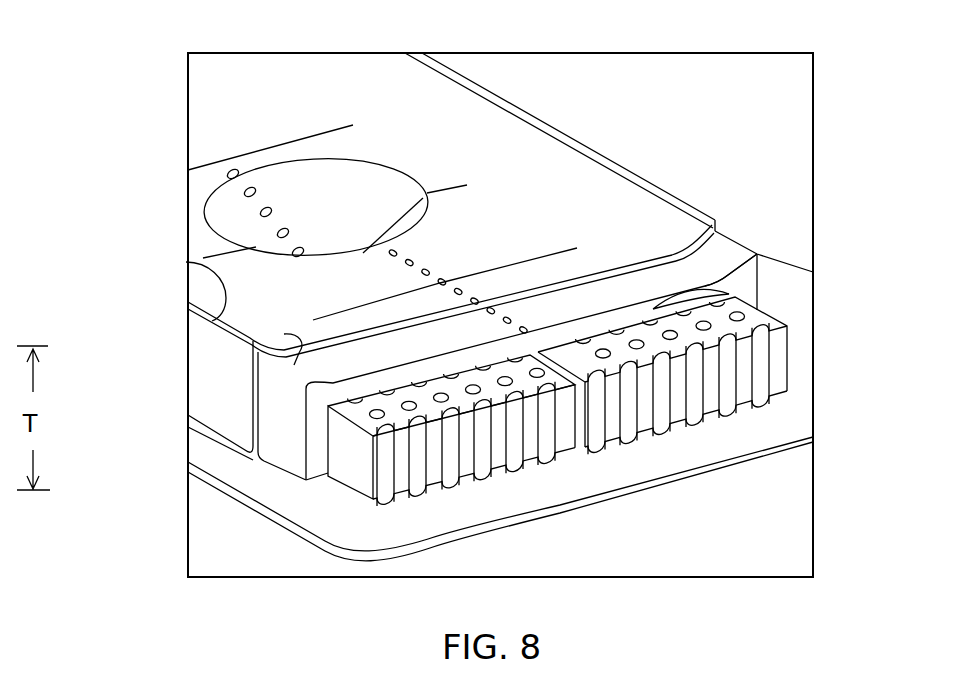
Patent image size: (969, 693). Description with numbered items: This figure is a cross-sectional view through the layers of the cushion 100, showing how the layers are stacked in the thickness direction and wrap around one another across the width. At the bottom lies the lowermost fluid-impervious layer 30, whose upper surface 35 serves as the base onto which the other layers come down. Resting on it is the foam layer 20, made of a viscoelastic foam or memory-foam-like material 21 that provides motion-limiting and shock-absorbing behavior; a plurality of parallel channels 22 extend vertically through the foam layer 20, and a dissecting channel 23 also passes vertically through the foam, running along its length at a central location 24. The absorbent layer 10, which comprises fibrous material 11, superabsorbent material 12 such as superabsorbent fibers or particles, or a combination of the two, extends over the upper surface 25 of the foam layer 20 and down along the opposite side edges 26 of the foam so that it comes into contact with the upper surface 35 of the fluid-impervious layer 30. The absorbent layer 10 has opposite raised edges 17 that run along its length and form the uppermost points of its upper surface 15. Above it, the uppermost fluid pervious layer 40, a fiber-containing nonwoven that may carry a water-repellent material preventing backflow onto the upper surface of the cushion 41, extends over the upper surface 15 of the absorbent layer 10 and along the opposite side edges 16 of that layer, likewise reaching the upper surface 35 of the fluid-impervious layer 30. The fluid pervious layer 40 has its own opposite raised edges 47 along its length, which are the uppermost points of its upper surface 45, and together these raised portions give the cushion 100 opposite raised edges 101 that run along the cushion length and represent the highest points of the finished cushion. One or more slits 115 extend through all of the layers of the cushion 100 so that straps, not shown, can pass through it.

The cushion 100 is at (708, 156).
The absorbent layer 10 is at (722, 250).
The fibrous material 11 is at (744, 280).
The superabsorbent material 12 is at (706, 302).
The upper surface of absorbent layer 15 is at (727, 243).
The opposite side edges of absorbent layer 16 is at (275, 401).
The opposite raised edges of absorbent layer 17 is at (226, 335).
The foam layer 20 is at (498, 452).
The viscoelastic foam or memory-foam-like material 21 is at (352, 464).
The parallel channels 22 is at (497, 442).
The dissecting channel 23 is at (583, 450).
The central location of foam layer 24 is at (572, 458).
The upper surface of foam layer 25 is at (755, 314).
The opposite side edges of foam layer 26 is at (336, 443).
The lowermost fluid-impervious layer 30 is at (748, 443).
The upper surface of lowermost fluid-impervious layer 35 is at (226, 466).
The uppermost fluid pervious layer 40 is at (577, 248).
The upper surface of the cushion 41 is at (214, 373).
The upper surface of uppermost fluid pervious layer 45 is at (507, 210).
The opposite raised edges of uppermost fluid pervious layer 47 is at (690, 257).
The opposite raised edges of cushion 101 is at (658, 212).
The slits 115 is at (594, 202).